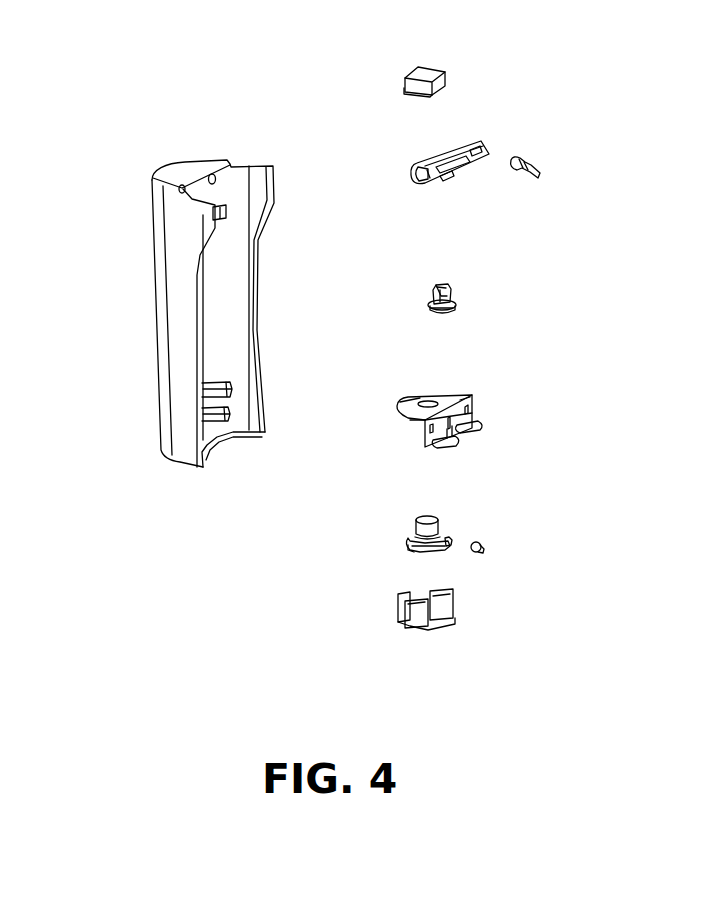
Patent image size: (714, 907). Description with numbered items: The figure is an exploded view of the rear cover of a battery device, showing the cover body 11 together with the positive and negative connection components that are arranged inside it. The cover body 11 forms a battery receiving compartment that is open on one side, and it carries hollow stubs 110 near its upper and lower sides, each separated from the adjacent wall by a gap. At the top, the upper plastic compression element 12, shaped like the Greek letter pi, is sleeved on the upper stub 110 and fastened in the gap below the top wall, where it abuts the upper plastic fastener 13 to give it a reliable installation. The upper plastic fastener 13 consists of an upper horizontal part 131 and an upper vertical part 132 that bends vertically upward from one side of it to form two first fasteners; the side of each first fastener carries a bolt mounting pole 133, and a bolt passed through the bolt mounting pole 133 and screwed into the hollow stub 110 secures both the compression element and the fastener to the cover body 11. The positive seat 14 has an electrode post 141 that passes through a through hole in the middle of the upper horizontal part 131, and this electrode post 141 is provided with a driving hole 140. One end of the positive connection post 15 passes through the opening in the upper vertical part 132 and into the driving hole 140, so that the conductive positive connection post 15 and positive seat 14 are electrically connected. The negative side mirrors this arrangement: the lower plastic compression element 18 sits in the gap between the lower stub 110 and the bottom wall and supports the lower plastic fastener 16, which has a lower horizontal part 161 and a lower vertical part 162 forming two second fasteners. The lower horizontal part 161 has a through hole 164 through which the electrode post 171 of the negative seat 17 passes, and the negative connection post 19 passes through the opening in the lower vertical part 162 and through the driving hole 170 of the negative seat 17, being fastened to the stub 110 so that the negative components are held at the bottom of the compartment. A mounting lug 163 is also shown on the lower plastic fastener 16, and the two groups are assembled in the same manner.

The cover body 11 is at (168, 262).
The hollow stub 110 is at (207, 174).
The upper plastic compression element 12 is at (438, 71).
The upper plastic fastener 13 is at (490, 130).
The upper horizontal part 131 is at (421, 183).
The upper vertical part 132 is at (455, 160).
The bolt mounting pole 133 is at (447, 180).
The positive seat 14 is at (456, 307).
The driving hole 140 is at (440, 287).
The electrode post 141 is at (428, 303).
The positive connection post 15 is at (532, 177).
The lower plastic fastener 16 is at (412, 452).
The lower horizontal part 161 is at (415, 400).
The lower vertical part 162 is at (472, 410).
The mounting lug 163 is at (465, 435).
The through hole 164 is at (425, 420).
The negative seat 17 is at (414, 552).
The electrode post 171 is at (413, 524).
The driving hole 170 is at (452, 548).
The negative connection post 19 is at (479, 551).
The lower plastic compression element 18 is at (415, 630).